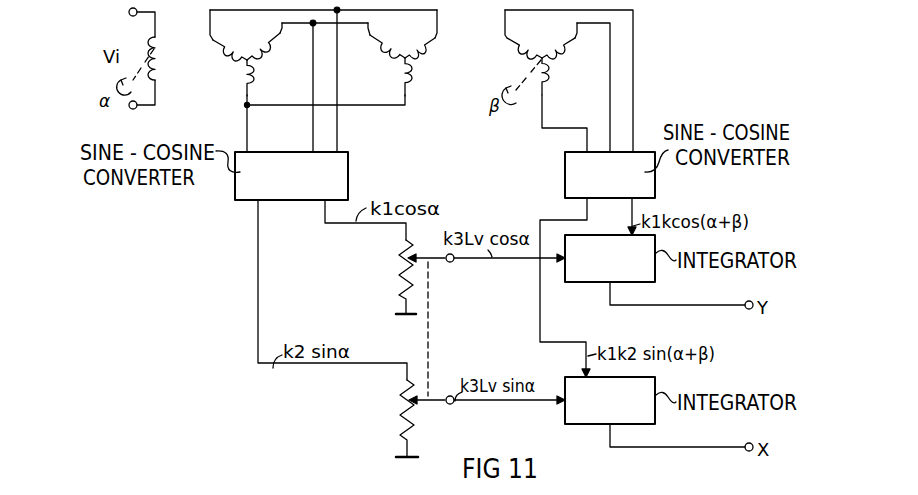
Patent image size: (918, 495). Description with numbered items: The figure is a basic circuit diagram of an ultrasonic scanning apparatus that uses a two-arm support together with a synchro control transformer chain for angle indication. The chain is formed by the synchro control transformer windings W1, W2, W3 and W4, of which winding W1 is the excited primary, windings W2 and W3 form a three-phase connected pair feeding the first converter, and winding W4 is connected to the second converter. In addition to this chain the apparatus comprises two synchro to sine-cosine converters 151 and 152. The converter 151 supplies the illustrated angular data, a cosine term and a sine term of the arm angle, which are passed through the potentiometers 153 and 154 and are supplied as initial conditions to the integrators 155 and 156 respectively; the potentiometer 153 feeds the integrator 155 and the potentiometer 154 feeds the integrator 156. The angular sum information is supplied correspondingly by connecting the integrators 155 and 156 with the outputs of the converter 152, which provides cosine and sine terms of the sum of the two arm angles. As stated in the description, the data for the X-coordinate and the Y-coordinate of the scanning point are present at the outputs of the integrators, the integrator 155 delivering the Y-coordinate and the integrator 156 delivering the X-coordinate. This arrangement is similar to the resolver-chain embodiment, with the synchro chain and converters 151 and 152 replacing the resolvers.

The synchro control transformer winding W1 is at (160, 48).
The synchro control transformer winding W2 is at (253, 54).
The synchro control transformer winding W3 is at (416, 54).
The synchro control transformer winding W4 is at (551, 53).
The synchro to sine-cosine converter 151 is at (291, 176).
The synchro to sine-cosine converter 152 is at (610, 175).
The potentiometer 153 is at (400, 258).
The potentiometer 154 is at (400, 408).
The integrator 155 is at (610, 258).
The integrator 156 is at (610, 400).